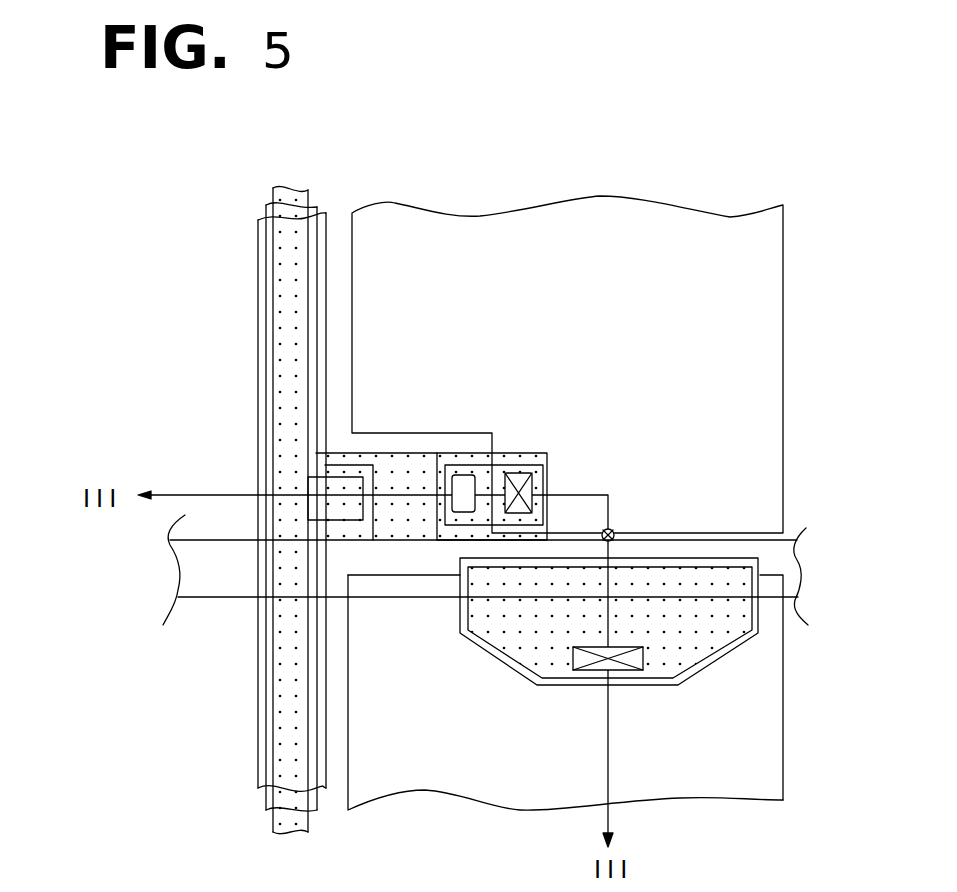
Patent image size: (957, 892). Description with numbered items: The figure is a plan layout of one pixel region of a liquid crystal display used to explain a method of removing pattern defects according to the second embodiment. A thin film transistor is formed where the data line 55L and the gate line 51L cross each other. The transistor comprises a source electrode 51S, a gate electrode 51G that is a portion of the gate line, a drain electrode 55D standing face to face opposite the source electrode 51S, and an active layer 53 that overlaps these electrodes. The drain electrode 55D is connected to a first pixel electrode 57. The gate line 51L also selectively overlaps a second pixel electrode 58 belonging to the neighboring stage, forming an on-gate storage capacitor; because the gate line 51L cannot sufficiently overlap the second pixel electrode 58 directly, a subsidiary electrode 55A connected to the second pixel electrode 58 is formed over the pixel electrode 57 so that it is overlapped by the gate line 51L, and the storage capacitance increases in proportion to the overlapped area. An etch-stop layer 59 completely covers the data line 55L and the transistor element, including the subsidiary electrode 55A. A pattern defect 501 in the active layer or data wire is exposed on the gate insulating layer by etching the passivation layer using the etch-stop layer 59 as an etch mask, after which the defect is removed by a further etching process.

The active layer 53 is at (288, 190).
The data line 55L is at (322, 216).
The etch-stop layer 59 is at (259, 272).
The first pixel electrode 57 is at (783, 242).
The source electrode 51S is at (343, 467).
The gate electrode 51G is at (453, 452).
The drain electrode 55D is at (547, 457).
The pattern defect 501 is at (612, 533).
The gate line 51L is at (820, 562).
The second pixel electrode 58 is at (783, 662).
The subsidiary electrode 55A is at (707, 660).